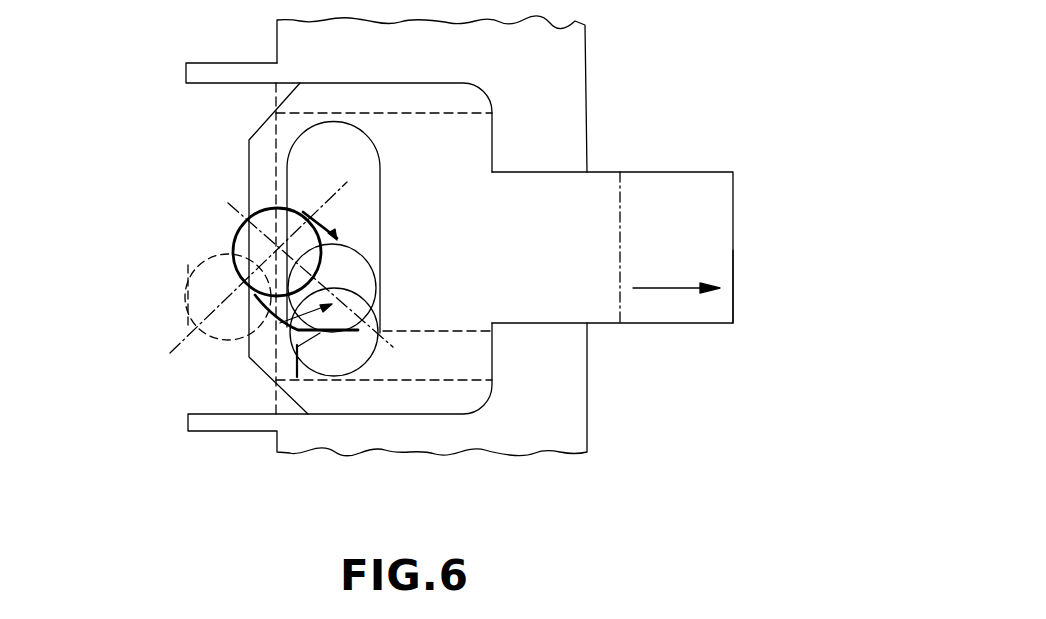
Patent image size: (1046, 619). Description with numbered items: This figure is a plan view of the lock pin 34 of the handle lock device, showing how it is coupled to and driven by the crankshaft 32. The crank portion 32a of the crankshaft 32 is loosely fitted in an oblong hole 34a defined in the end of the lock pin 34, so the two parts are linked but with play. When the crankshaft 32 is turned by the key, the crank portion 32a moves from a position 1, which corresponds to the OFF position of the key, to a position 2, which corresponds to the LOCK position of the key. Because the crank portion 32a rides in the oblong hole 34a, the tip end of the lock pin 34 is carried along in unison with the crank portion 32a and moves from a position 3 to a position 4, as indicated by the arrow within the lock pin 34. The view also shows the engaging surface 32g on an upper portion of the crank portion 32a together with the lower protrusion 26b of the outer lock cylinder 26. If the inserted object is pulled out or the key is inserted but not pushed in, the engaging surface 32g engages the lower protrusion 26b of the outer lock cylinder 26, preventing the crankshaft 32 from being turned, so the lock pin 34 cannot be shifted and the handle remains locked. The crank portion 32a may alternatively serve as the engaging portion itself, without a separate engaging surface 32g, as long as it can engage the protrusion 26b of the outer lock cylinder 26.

The outer lock cylinder 26 is at (575, 97).
The lower protrusion 26b is at (347, 330).
The crankshaft 32 is at (233, 237).
The crank portion 32a is at (232, 253).
The engaging surface 32g is at (318, 333).
The lock pin 34 is at (722, 232).
The oblong hole 34a is at (287, 167).
The position 1 is at (213, 348).
The position 2 is at (367, 273).
The position 3 is at (620, 300).
The position 4 is at (733, 292).